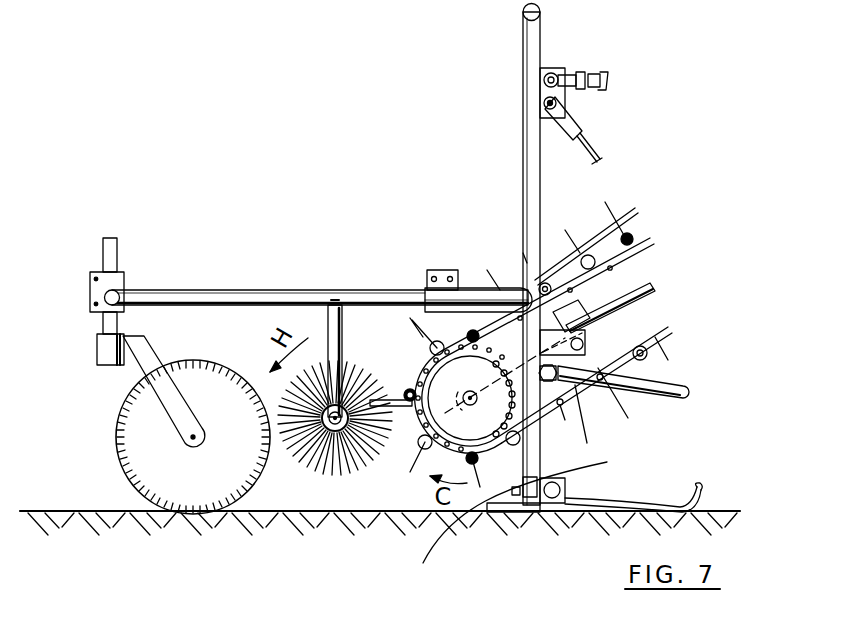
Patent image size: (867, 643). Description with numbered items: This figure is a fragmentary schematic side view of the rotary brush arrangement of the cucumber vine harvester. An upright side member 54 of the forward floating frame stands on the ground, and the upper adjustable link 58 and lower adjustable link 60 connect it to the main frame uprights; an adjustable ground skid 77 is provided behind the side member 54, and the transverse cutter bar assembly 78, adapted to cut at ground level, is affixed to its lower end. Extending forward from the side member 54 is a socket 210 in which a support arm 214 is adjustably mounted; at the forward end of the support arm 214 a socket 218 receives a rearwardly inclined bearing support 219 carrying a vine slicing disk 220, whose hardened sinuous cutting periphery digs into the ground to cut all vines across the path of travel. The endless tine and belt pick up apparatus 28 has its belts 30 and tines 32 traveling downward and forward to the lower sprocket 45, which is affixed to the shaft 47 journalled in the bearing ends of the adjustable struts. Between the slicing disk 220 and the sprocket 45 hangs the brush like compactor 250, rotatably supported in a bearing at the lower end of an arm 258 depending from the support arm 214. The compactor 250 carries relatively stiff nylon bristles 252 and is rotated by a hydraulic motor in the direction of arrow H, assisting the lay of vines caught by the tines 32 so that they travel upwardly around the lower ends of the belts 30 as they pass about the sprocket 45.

The endless tine and belt pick up apparatus 28 is at (640, 223).
The belts 30 is at (593, 223).
The tines 32 is at (565, 230).
The sprocket 45 is at (418, 385).
The shaft 47 is at (466, 391).
The side member 54 is at (528, 143).
The upper adjustable link 58 is at (595, 80).
The lower adjustable link 60 is at (677, 373).
The adjustable ground skid 77 is at (697, 494).
The transverse cutter bar assembly 78 is at (520, 512).
The socket 210 is at (470, 290).
The support arm 214 is at (200, 295).
The socket 218 is at (127, 273).
The bearing support 219 is at (135, 370).
The vine slicing disk 220 is at (140, 440).
The brush like compactor 250 is at (297, 486).
The bristles 252 is at (293, 452).
The arm 258 is at (330, 325).